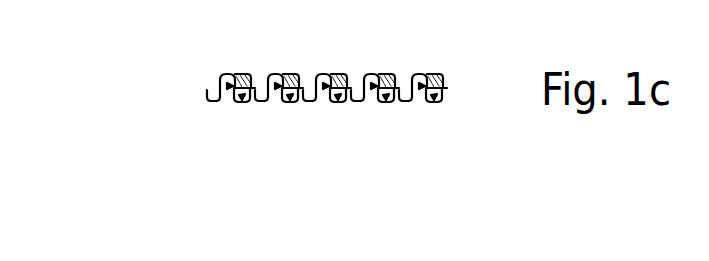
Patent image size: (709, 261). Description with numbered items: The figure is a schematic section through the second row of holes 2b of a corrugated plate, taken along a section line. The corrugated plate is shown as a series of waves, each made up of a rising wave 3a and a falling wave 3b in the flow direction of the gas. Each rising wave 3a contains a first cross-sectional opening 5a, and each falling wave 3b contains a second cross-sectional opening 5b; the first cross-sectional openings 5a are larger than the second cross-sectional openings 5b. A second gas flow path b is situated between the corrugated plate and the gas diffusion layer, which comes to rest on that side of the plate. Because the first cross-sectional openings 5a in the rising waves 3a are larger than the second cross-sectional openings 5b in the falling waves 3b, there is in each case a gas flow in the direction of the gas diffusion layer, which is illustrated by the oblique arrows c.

The second row of holes 2b is at (370, 80).
The rising wave 3a is at (428, 73).
The falling wave 3b is at (399, 73).
The first cross-sectional opening 5a is at (455, 92).
The second cross-sectional opening 5b is at (420, 68).
The second gas flow path b is at (249, 103).
The oblique arrow c is at (219, 107).